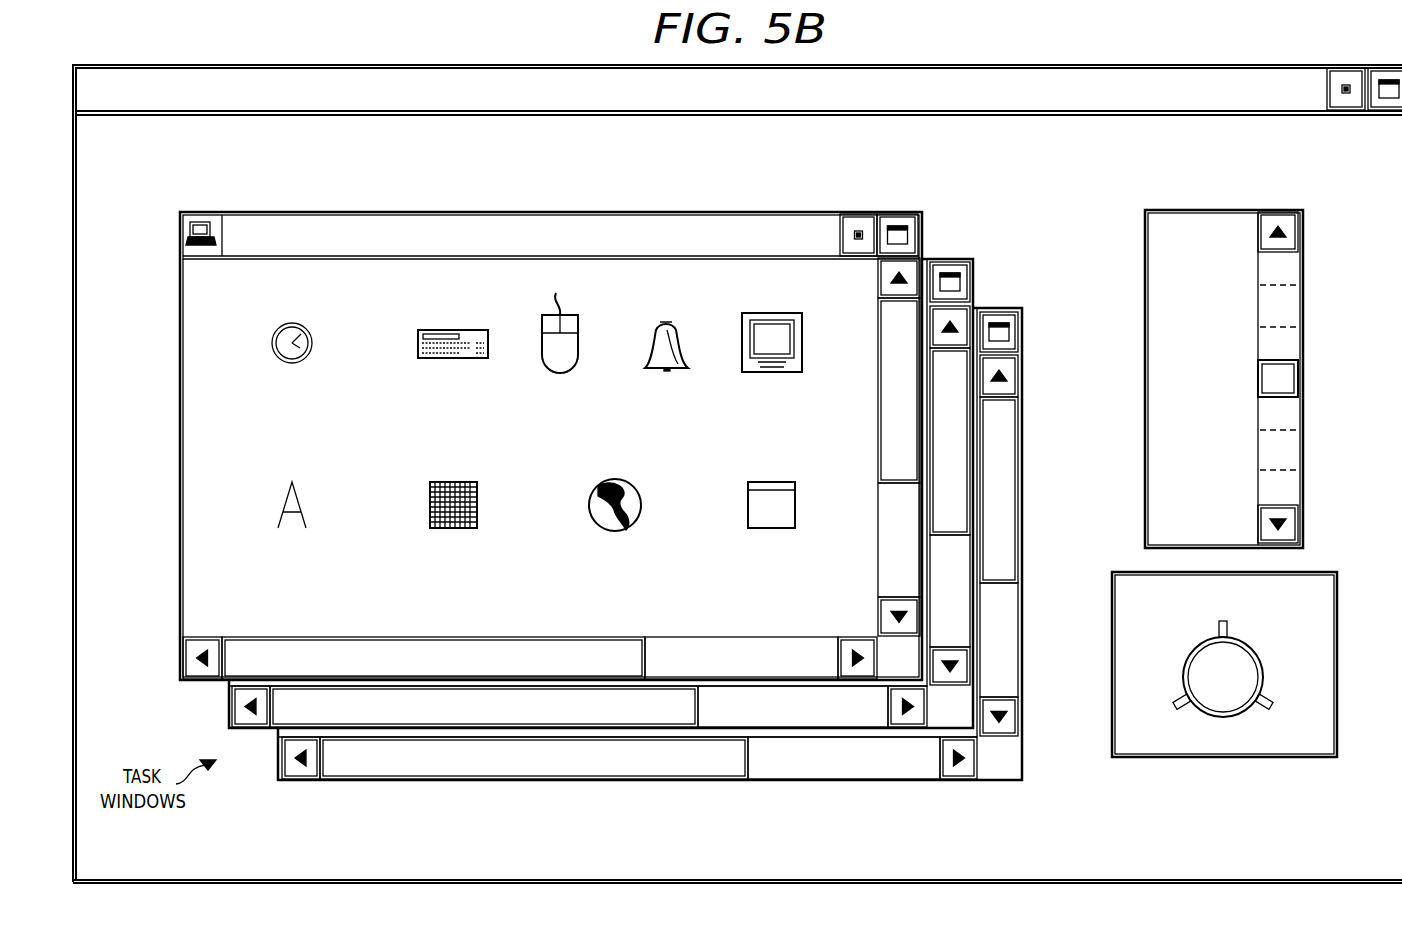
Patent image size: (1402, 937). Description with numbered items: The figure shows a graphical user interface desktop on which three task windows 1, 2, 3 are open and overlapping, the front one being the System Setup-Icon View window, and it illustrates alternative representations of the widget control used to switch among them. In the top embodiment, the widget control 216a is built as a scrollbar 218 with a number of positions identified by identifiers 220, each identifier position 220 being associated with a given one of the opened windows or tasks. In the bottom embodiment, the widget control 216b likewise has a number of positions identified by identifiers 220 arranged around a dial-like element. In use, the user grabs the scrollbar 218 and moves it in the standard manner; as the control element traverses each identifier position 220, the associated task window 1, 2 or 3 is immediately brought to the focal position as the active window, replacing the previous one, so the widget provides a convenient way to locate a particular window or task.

The task window 1 is at (922, 233).
The task window 2 is at (973, 285).
The task window 3 is at (1022, 334).
The widget control 216a is at (1195, 210).
The widget control 216b is at (1226, 718).
The scrollbar 218 is at (1294, 378).
The identifiers 220 is at (1296, 308).